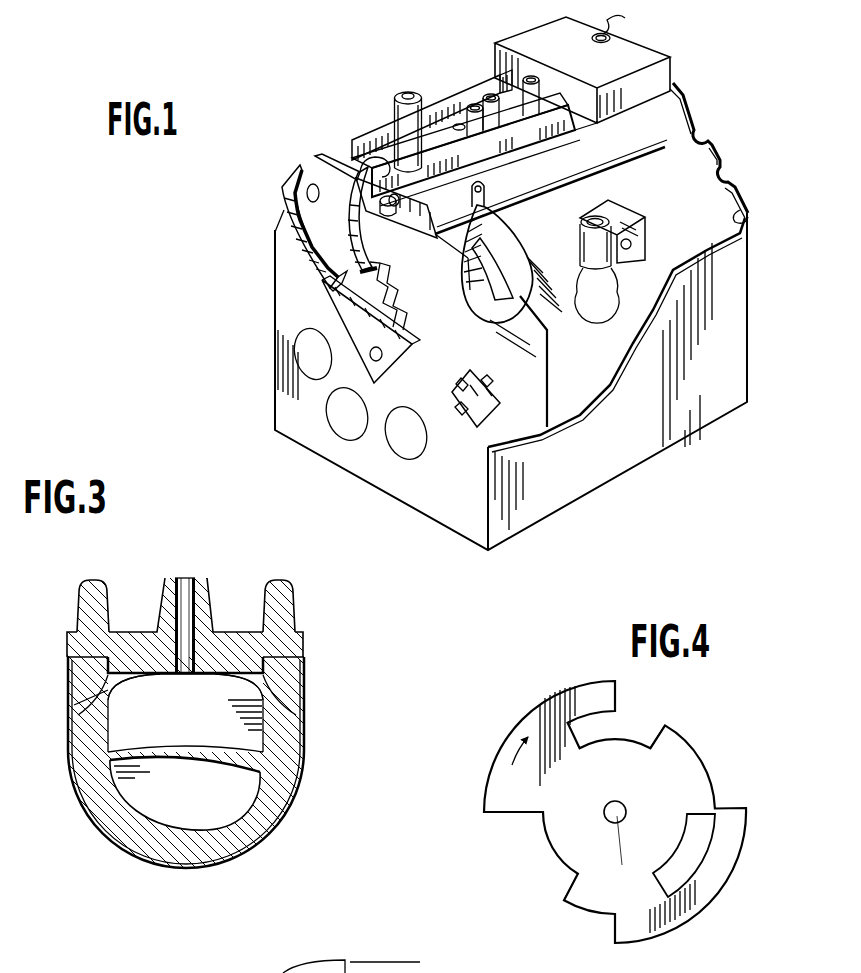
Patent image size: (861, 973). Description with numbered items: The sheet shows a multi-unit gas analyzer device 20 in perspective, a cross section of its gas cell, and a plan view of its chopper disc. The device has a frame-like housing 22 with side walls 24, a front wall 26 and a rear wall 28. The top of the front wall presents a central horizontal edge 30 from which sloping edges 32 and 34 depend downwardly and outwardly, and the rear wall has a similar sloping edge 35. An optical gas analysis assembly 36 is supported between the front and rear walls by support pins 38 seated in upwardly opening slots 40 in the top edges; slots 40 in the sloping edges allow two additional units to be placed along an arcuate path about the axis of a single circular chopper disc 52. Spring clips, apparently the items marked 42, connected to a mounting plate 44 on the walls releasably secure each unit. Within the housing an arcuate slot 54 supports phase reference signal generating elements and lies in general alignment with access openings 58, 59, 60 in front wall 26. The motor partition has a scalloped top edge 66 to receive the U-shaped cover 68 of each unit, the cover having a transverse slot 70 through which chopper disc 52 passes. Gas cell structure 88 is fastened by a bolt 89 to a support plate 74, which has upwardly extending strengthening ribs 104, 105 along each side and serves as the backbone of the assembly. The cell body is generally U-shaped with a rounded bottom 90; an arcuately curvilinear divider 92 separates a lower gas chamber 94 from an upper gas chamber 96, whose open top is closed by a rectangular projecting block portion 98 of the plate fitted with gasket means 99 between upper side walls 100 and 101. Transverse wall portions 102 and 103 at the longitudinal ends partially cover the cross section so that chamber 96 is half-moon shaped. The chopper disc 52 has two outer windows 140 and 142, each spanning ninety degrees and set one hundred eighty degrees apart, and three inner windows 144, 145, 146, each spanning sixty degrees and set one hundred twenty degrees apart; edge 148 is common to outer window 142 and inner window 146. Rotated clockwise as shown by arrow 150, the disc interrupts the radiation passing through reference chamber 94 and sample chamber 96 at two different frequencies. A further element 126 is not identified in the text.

In FIG. 1, the gas analyzer device 20 is at (485, 52).
In FIG. 1, the frame-like housing 22 is at (753, 372).
In FIG. 1, the side walls 24 is at (690, 432).
In FIG. 1, the front wall 26 is at (449, 510).
In FIG. 1, the rear wall 28 is at (749, 214).
In FIG. 1, the horizontal edge 30 is at (339, 158).
In FIG. 1, the sloping edge 32 is at (305, 167).
In FIG. 1, the sloping edge 34 is at (438, 221).
In FIG. 1, the sloping edge 35 is at (718, 158).
In FIG. 1, the optical gas analysis assembly 36 is at (463, 102).
In FIG. 1, the support pins 38 is at (386, 216).
In FIG. 1, the upwardly opening slots 40 is at (320, 190).
In FIG. 1, the spring arm 42 is at (350, 223).
In FIG. 1, the mounting plate 44 is at (343, 312).
In FIG. 1, the chopper disc 52 is at (536, 280).
In FIG. 4, the chopper disc 52 is at (700, 924).
In FIG. 1, the arcuate slot 54 is at (480, 406).
In FIG. 1, the access opening 58 is at (331, 357).
In FIG. 1, the access opening 59 is at (340, 422).
In FIG. 1, the access opening 60 is at (407, 450).
In FIG. 1, the scalloped top edge 66 is at (491, 330).
In FIG. 1, the U-shaped cover 68 is at (613, 166).
In FIG. 1, the transverse slot 70 is at (486, 192).
In FIG. 1, the bolt 89 is at (455, 126).
In FIG. 1, the lamp housing 126 is at (652, 53).
In FIG. 3, the support plate 74 is at (245, 633).
In FIG. 3, the gas cell structure 88 is at (300, 765).
In FIG. 3, the rounded bottom 90 is at (210, 854).
In FIG. 3, the arcuately curvilinear divider 92 is at (175, 762).
In FIG. 3, the lower gas chamber 94 is at (219, 794).
In FIG. 3, the upper gas chamber 96 is at (186, 734).
In FIG. 3, the rectangular projecting block portion 98 is at (78, 715).
In FIG. 3, the gasket means 99 is at (258, 656).
In FIG. 3, the upper side wall 100 is at (78, 688).
In FIG. 3, the upper side wall 101 is at (290, 690).
In FIG. 3, the transverse wall portion 102 is at (120, 682).
In FIG. 3, the transverse wall portion 103 is at (247, 685).
In FIG. 3, the strengthening rib 104 is at (97, 577).
In FIG. 3, the strengthening rib 105 is at (275, 578).
In FIG. 4, the outer window 140 is at (730, 787).
In FIG. 4, the outer window 142 is at (598, 925).
In FIG. 4, the inner window 144 is at (652, 732).
In FIG. 4, the inner window 145 is at (677, 865).
In FIG. 4, the inner window 146 is at (562, 878).
In FIG. 4, the common edge 148 is at (525, 815).
In FIG. 4, the arrow 150 is at (528, 761).